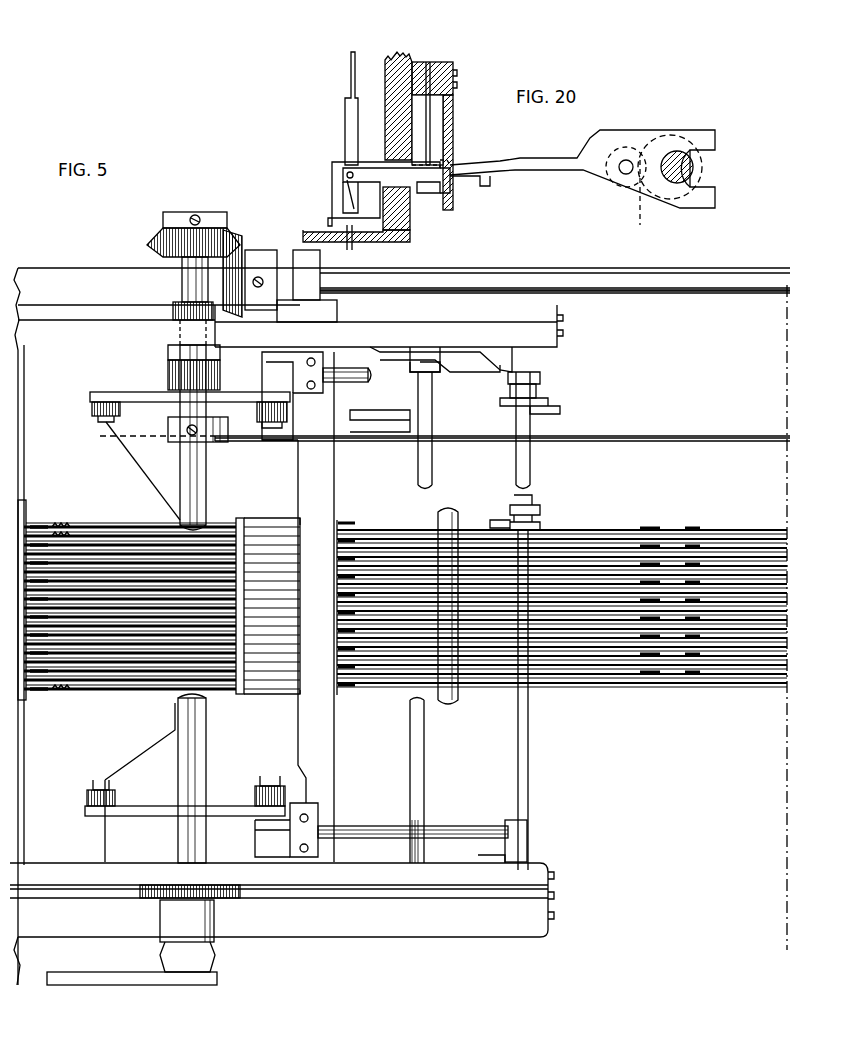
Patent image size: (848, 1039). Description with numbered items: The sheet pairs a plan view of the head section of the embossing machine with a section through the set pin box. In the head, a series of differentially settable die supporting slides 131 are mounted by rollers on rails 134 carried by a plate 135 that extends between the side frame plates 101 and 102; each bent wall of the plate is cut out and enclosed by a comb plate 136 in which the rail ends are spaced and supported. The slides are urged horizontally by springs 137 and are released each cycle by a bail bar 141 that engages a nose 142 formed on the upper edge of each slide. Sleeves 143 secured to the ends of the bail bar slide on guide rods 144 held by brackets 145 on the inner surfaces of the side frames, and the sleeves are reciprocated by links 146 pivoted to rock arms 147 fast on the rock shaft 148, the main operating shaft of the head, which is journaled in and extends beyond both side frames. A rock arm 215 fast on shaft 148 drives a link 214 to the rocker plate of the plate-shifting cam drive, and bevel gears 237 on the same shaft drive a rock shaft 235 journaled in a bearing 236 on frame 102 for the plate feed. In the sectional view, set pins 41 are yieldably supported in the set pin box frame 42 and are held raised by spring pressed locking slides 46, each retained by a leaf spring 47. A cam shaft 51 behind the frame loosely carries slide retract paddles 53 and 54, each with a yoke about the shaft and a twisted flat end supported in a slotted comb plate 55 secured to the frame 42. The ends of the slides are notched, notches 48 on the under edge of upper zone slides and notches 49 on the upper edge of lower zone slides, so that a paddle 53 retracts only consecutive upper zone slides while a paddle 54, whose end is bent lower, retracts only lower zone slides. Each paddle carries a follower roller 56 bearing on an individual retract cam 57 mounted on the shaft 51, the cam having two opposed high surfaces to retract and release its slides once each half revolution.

In FIG. 20, the set pin 41 is at (348, 128).
In FIG. 20, the set pin box frame 42 is at (406, 60).
In FIG. 20, the locking slide 46 is at (342, 182).
In FIG. 20, the leaf spring 47 is at (432, 115).
In FIG. 20, the notch 48 is at (424, 194).
In FIG. 20, the notch 49 is at (440, 160).
In FIG. 20, the cam shaft 51 is at (693, 170).
In FIG. 20, the slide retract paddle 53 is at (643, 132).
In FIG. 20, the slide retract paddle 54 is at (490, 186).
In FIG. 20, the comb plate 55 is at (454, 130).
In FIG. 20, the follower roller 56 is at (638, 190).
In FIG. 20, the retract cam 57 is at (688, 132).
In FIG. 5, the side frame plate 101 is at (508, 878).
In FIG. 5, the side frame plate 102 is at (492, 322).
In FIG. 5, the die supporting slide 131 is at (404, 672).
In FIG. 5, the rail 134 is at (93, 534).
In FIG. 5, the plate 135 is at (86, 462).
In FIG. 5, the comb plate 136 is at (20, 495).
In FIG. 5, the spring 137 is at (60, 526).
In FIG. 5, the bail bar 141 is at (328, 500).
In FIG. 5, the nose 142 is at (300, 535).
In FIG. 5, the sleeve 143 is at (296, 400).
In FIG. 5, the guide rod 144 is at (350, 380).
In FIG. 5, the bracket 145 is at (258, 378).
In FIG. 5, the link 146 is at (294, 402).
In FIG. 5, the rock arm 147 is at (140, 392).
In FIG. 5, the rock shaft 148 is at (184, 497).
In FIG. 5, the link 214 is at (690, 443).
In FIG. 5, the rock arm 215 is at (218, 443).
In FIG. 5, the rock shaft 235 is at (690, 289).
In FIG. 5, the bearing 236 is at (320, 268).
In FIG. 5, the bevel gears 237 is at (236, 263).